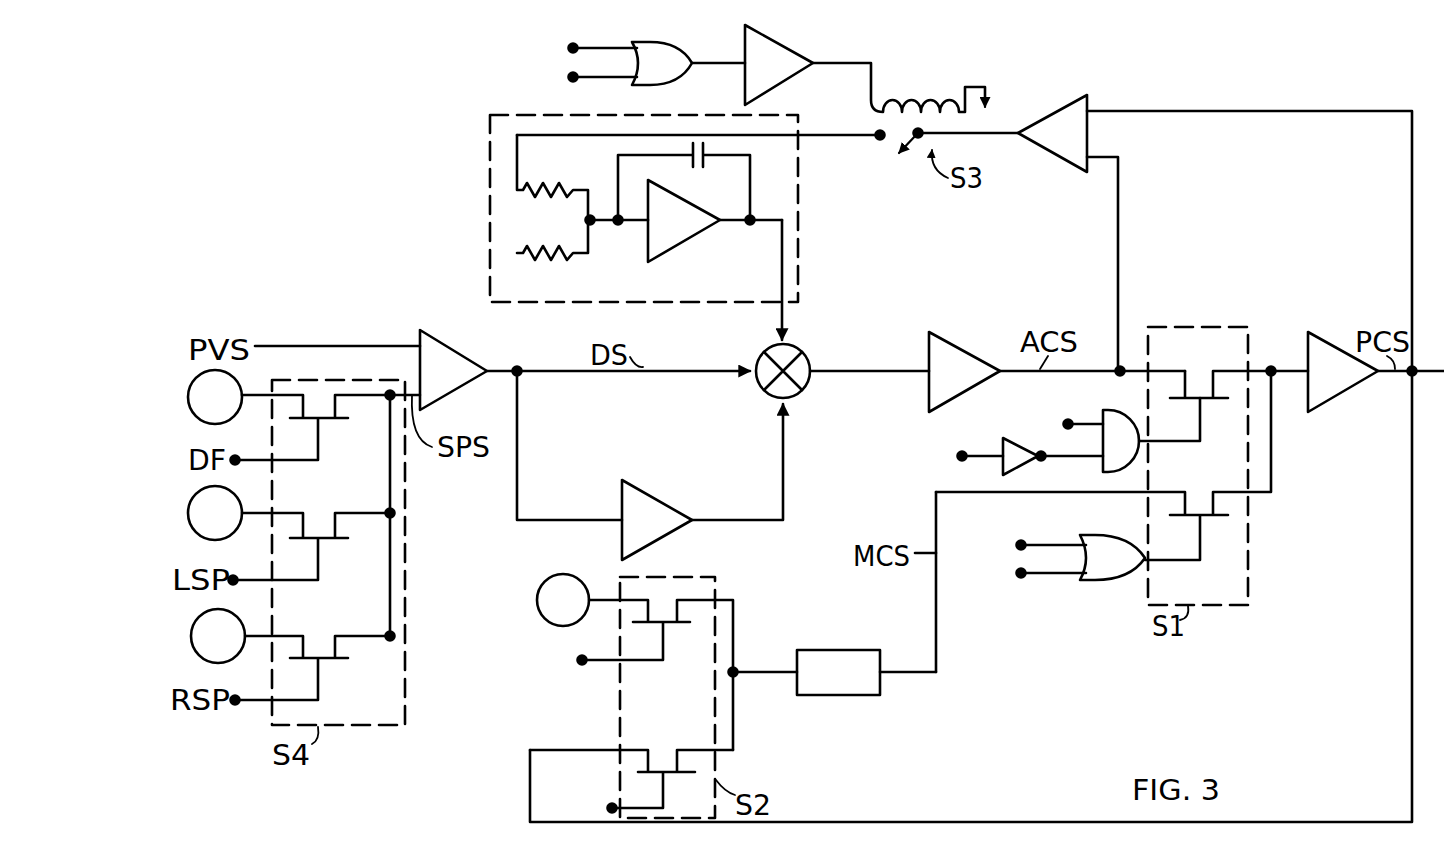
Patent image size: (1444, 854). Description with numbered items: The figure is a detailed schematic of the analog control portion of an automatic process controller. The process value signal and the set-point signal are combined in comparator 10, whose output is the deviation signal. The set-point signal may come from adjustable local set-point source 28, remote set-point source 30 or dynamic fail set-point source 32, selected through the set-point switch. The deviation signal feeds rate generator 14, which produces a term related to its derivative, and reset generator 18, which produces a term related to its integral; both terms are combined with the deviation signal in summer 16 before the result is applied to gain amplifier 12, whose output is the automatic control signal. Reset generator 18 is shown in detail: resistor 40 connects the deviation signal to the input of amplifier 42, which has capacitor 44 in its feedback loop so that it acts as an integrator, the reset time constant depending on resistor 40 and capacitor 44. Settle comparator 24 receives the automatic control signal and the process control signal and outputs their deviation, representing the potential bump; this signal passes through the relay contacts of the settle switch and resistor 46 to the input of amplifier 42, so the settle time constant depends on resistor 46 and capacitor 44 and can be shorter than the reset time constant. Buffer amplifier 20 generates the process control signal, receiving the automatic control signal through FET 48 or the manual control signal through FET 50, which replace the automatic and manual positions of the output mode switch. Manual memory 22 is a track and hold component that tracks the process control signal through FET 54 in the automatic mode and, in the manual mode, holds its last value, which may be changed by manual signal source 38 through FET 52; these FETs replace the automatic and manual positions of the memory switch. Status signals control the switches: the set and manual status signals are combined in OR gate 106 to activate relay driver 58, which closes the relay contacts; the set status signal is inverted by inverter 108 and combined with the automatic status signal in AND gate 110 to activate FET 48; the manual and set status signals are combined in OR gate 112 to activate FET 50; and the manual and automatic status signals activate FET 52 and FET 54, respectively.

The comparator 10 is at (458, 393).
The gain amplifier 12 is at (963, 353).
The rate generator 14 is at (660, 538).
The summer 16 is at (803, 350).
The reset generator 18 is at (490, 137).
The buffer amplifier 20 is at (1335, 400).
The manual memory 22 is at (855, 697).
The settle comparator 24 is at (1040, 122).
The local set-point source 28 is at (215, 513).
The remote set-point source 30 is at (218, 636).
The dynamic fail set-point source 32 is at (215, 397).
The manual signal source 38 is at (563, 600).
The resistor 40 is at (577, 256).
The amplifier 42 is at (684, 240).
The capacitor 44 is at (693, 169).
The resistor 46 is at (570, 182).
The FET 48 is at (1158, 373).
The FET 50 is at (1155, 492).
The FET 52 is at (668, 628).
The FET 54 is at (664, 770).
The relay driver 58 is at (773, 40).
The OR gate 106 is at (675, 45).
The inverter 108 is at (1028, 467).
The AND gate 110 is at (1128, 412).
The OR gate 112 is at (1128, 580).